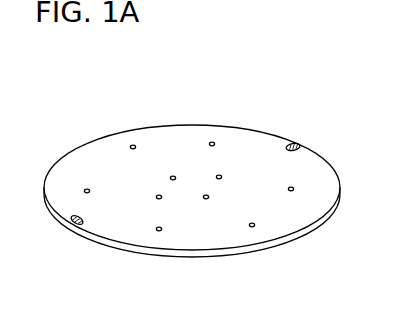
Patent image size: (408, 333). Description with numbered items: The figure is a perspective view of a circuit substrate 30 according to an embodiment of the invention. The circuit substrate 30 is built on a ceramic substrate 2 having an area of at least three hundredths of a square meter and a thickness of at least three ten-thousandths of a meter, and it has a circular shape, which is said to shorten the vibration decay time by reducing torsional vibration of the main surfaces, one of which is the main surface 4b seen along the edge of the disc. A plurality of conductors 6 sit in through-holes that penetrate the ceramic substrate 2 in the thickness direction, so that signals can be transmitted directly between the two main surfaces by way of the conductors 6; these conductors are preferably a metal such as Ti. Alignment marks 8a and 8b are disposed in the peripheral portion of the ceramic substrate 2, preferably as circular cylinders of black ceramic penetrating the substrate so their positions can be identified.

The circuit substrate 30 is at (192, 167).
The ceramic substrate 2 is at (192, 194).
The conductor 6 is at (212, 143).
The alignment mark 8a is at (80, 233).
The alignment mark 8b is at (299, 145).
The main surface 4b is at (197, 235).